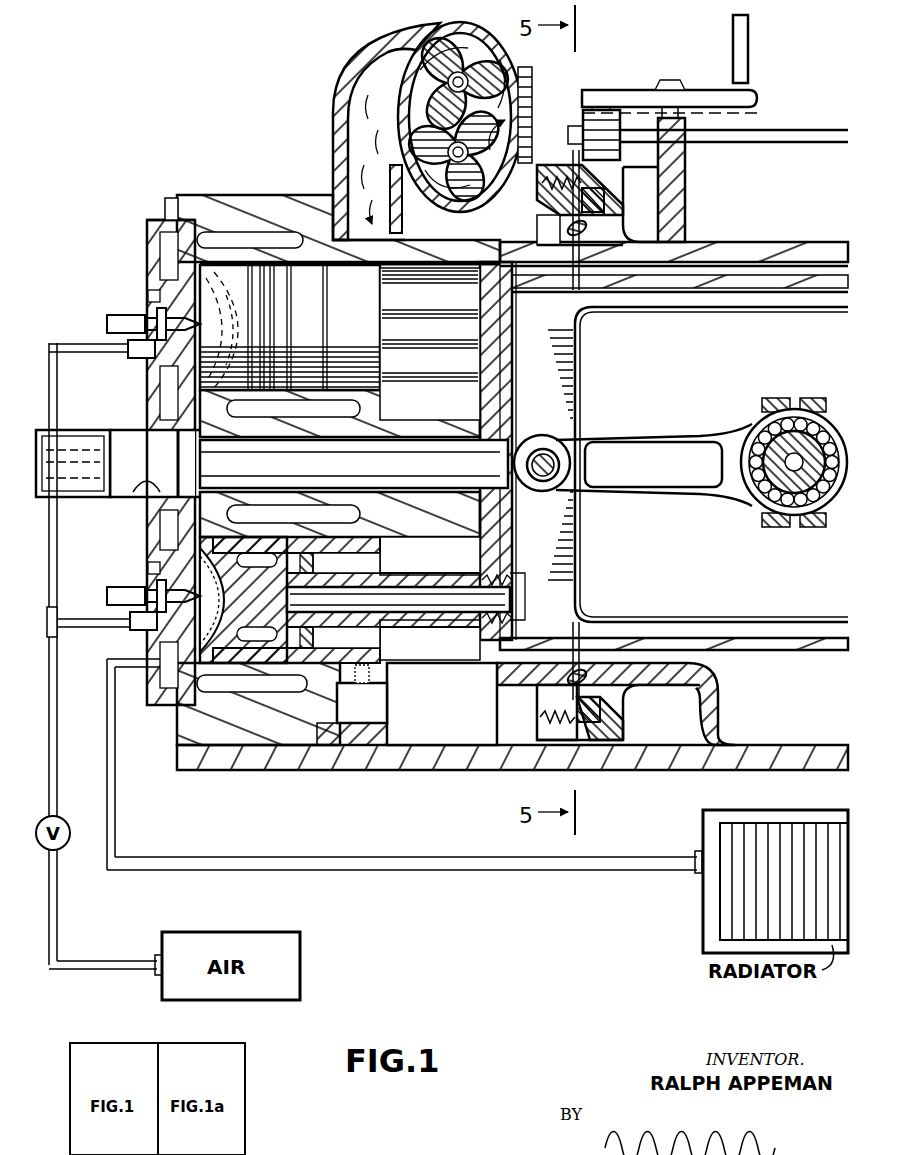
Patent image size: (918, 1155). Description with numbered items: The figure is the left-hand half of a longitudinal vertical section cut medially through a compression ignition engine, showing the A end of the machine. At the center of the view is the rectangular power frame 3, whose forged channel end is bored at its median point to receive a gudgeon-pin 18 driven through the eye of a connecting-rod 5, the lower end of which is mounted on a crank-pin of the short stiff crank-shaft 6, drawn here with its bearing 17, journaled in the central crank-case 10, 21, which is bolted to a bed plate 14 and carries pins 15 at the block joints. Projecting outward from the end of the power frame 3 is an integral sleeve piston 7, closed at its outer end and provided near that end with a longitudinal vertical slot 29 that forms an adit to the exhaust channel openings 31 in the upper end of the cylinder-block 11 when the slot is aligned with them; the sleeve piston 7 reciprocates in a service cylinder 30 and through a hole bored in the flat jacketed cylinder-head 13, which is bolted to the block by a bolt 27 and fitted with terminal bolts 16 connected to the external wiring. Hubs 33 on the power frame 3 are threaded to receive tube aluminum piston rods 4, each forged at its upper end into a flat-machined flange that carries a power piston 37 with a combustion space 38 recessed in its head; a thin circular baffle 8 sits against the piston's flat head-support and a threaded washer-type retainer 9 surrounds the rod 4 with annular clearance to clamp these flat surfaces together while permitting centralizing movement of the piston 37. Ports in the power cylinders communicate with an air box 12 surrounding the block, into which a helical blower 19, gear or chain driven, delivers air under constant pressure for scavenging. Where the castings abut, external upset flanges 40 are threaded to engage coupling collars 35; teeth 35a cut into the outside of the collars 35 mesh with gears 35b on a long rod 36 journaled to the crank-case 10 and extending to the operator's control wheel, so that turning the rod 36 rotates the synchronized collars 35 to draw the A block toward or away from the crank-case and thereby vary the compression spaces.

The power frame 3 is at (574, 357).
The piston rod 4 is at (443, 305).
The connecting-rod 5 is at (678, 432).
The crank-shaft 6 is at (760, 496).
The sleeve piston 7 is at (96, 492).
The baffle 8 is at (304, 636).
The retainer 9 is at (312, 560).
The crank-case 10 is at (770, 738).
The cylinder-block 11 is at (260, 192).
The air box 12 is at (397, 222).
The cylinder-head 13 is at (150, 550).
The bed plate 14 is at (444, 750).
The pin 15 is at (580, 235).
The terminal bolt 16 is at (136, 314).
The bearing 17 is at (762, 424).
The gudgeon-pin 18 is at (544, 450).
The blower 19 is at (440, 62).
The crank-case 21 is at (822, 243).
The bolt 27 is at (170, 196).
The longitudinal vertical slot 29 is at (121, 450).
The service cylinder 30 is at (133, 485).
The exhaust channel 31 is at (206, 498).
The hub 33 is at (480, 596).
The collar 35 is at (620, 184).
The teeth 35a is at (584, 158).
The gear 35b is at (580, 116).
The rod 36 is at (795, 128).
The power piston 37 is at (368, 334).
The combustion space 38 is at (224, 326).
The upset flange 40 is at (540, 233).
The A end A is at (285, 165).